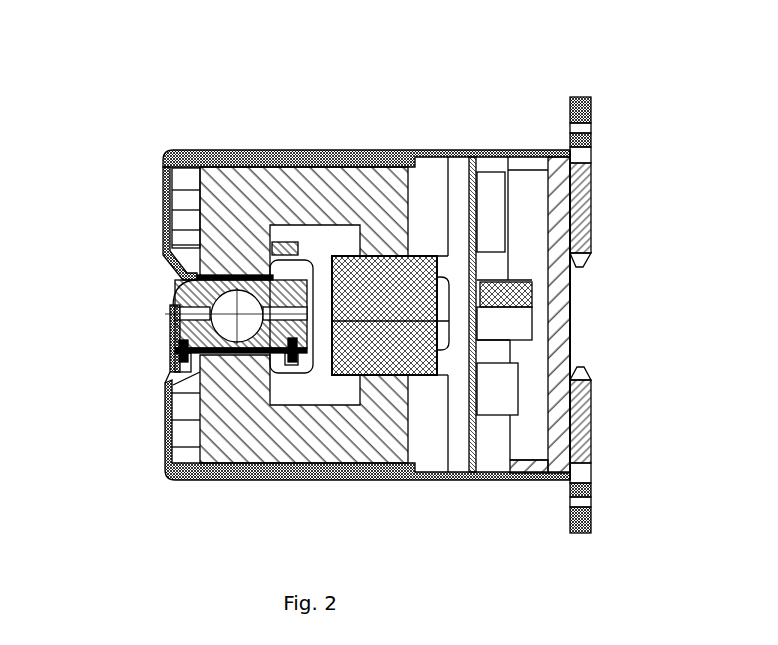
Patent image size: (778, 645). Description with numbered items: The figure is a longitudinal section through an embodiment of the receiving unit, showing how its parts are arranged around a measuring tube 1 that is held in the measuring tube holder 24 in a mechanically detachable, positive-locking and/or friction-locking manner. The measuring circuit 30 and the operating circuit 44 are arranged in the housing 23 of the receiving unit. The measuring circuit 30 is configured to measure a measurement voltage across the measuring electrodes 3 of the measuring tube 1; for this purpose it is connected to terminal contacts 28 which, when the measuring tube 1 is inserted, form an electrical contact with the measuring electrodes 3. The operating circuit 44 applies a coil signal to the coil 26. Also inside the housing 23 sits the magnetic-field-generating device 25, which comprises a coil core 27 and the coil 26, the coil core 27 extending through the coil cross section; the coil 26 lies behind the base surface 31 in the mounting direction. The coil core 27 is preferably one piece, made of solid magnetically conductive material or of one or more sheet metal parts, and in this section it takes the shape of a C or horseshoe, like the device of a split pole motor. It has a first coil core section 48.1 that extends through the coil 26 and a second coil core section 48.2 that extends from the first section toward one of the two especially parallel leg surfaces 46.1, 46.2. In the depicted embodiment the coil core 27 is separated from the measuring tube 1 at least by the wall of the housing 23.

The measuring tube 1 is at (158, 293).
The measuring electrodes 3 is at (278, 308).
The housing 23 is at (383, 471).
The measuring tube holder 24 is at (160, 348).
The magnetic-field-generating device 25 is at (348, 190).
The coil 26 is at (383, 275).
The coil core 27 is at (298, 196).
The terminal contacts 28 is at (290, 355).
The measuring circuit 30 is at (473, 245).
The base surface 31 is at (300, 335).
The operating circuit 44 is at (473, 308).
The leg surface 46.1 is at (215, 355).
The leg surface 46.2 is at (197, 272).
The first coil core section 48.1 is at (400, 385).
The second coil core section 48.2 is at (314, 438).